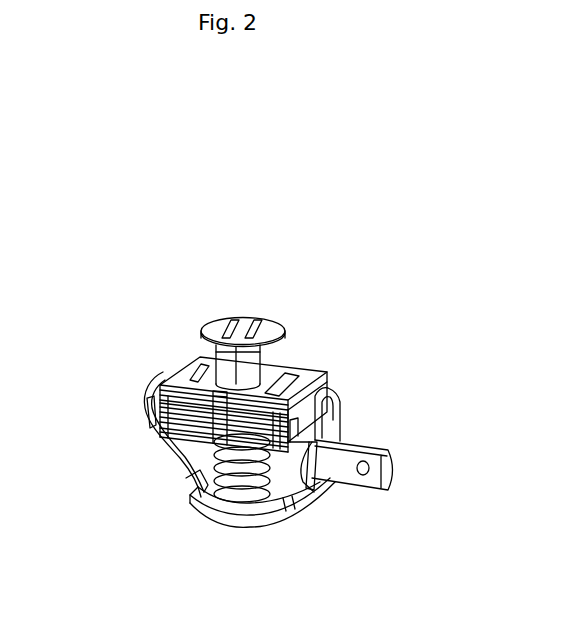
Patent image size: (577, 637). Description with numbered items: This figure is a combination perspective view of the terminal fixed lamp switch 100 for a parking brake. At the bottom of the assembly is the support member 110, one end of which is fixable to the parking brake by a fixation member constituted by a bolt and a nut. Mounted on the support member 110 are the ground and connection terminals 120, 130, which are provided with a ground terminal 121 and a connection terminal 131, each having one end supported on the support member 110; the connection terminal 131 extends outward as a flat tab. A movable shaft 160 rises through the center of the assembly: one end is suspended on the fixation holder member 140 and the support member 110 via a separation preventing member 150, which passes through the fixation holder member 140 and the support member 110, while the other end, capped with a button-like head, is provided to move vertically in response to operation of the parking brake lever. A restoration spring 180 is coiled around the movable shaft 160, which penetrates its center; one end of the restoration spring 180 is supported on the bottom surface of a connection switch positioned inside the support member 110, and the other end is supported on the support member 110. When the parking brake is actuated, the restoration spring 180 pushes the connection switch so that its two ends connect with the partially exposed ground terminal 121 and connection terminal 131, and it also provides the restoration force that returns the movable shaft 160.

The terminal fixed lamp switch 100 is at (407, 274).
The support member 110 is at (295, 516).
The ground terminal (ground and connection terminals) 120 is at (145, 389).
The ground terminal 121 is at (143, 414).
The connection terminal (ground and connection terminals) 130 is at (440, 417).
The connection terminal 131 is at (283, 426).
The fixation holder member 140 is at (182, 352).
The separation preventing member 150 is at (243, 528).
The movable shaft 160 is at (270, 361).
The restoration spring 180 is at (199, 487).